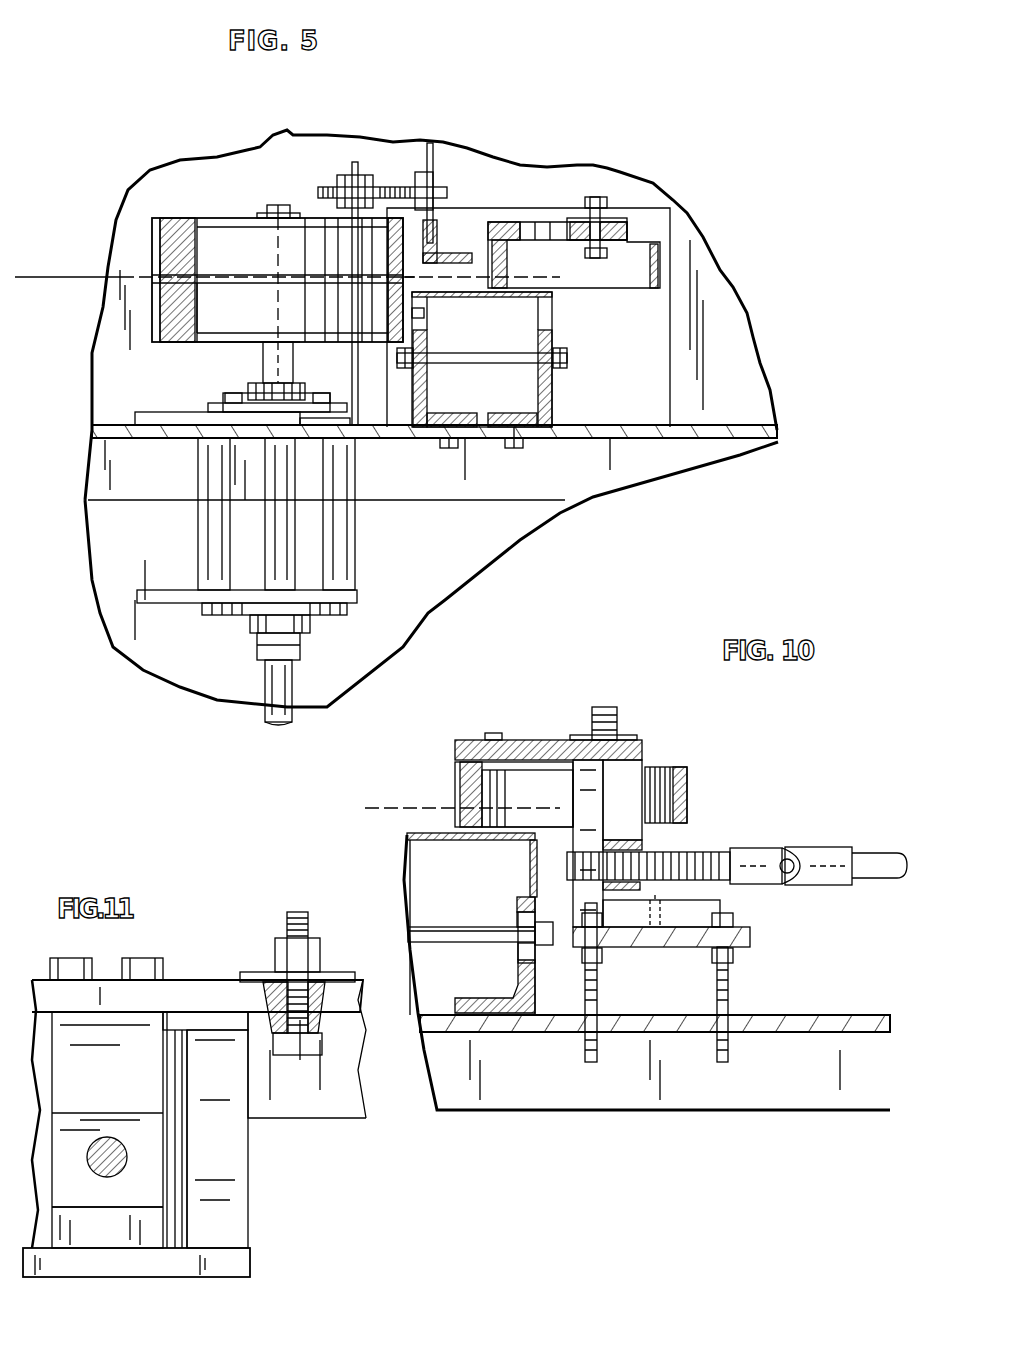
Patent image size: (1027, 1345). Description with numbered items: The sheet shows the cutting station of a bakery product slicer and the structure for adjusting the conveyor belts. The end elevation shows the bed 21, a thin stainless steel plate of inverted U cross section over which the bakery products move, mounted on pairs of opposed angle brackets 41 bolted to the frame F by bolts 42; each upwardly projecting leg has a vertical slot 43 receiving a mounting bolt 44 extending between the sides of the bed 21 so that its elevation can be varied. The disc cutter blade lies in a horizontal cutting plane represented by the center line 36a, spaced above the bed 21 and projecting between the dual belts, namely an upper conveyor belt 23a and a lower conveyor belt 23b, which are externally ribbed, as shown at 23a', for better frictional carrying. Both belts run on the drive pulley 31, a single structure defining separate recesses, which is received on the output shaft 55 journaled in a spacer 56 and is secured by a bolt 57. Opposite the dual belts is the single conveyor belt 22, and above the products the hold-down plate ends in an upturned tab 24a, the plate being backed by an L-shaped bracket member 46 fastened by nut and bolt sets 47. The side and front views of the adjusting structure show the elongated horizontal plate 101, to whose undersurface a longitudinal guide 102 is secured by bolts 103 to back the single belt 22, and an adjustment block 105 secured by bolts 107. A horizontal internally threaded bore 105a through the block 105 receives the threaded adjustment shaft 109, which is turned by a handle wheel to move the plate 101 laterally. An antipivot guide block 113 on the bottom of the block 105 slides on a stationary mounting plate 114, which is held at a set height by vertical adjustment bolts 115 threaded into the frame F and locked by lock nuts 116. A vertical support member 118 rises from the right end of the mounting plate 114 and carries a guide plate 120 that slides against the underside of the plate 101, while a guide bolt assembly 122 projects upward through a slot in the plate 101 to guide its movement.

In FIG. 5, the frame F is at (368, 436).
In FIG. 10, the frame F is at (775, 1028).
In FIG. 5, the center line 36a is at (72, 277).
In FIG. 5, the upper conveyor belt 23a is at (188, 261).
In FIG. 5, the external ribs 23a' is at (134, 254).
In FIG. 5, the lower conveyor belt 23b is at (240, 318).
In FIG. 5, the drive pulley 31 is at (232, 218).
In FIG. 5, the bolt 57 is at (278, 205).
In FIG. 5, the nut and bolt sets 47 is at (395, 178).
In FIG. 5, the L-shaped bracket member 46 is at (440, 230).
In FIG. 5, the upturned tab 24a is at (465, 250).
In FIG. 5, the single conveyor belt 22 is at (652, 245).
In FIG. 10, the single conveyor belt 22 is at (460, 778).
In FIG. 5, the bed 21 is at (552, 312).
In FIG. 5, the vertical slot 43 is at (548, 378).
In FIG. 5, the mounting bolt 44 is at (488, 357).
In FIG. 5, the angle brackets 41 is at (440, 418).
In FIG. 5, the bolts 42 is at (505, 440).
In FIG. 5, the output shaft 55 is at (292, 358).
In FIG. 5, the spacer 56 is at (357, 547).
In FIG. 10, the horizontal plate 101 is at (543, 740).
In FIG. 11, the horizontal plate 101 is at (200, 990).
In FIG. 10, the longitudinal guide 102 is at (470, 790).
In FIG. 10, the bolts 103 is at (496, 733).
In FIG. 10, the adjustment block 105 is at (632, 767).
In FIG. 11, the adjustment block 105 is at (130, 1088).
In FIG. 11, the internally threaded bore 105a is at (110, 1170).
In FIG. 11, the bolts 107 is at (150, 960).
In FIG. 10, the threaded adjustment shaft 109 is at (708, 850).
In FIG. 10, the antipivot guide block 113 is at (673, 927).
In FIG. 11, the antipivot guide block 113 is at (118, 1235).
In FIG. 10, the mounting plate 114 is at (750, 937).
In FIG. 11, the mounting plate 114 is at (200, 1268).
In FIG. 10, the vertical adjustment bolts 115 is at (585, 1050).
In FIG. 10, the lock nuts 116 is at (735, 921).
In FIG. 10, the vertical support member 118 is at (583, 790).
In FIG. 11, the vertical support member 118 is at (235, 1158).
In FIG. 11, the guide plate 120 is at (228, 1020).
In FIG. 11, the guide bolt assembly 122 is at (308, 920).